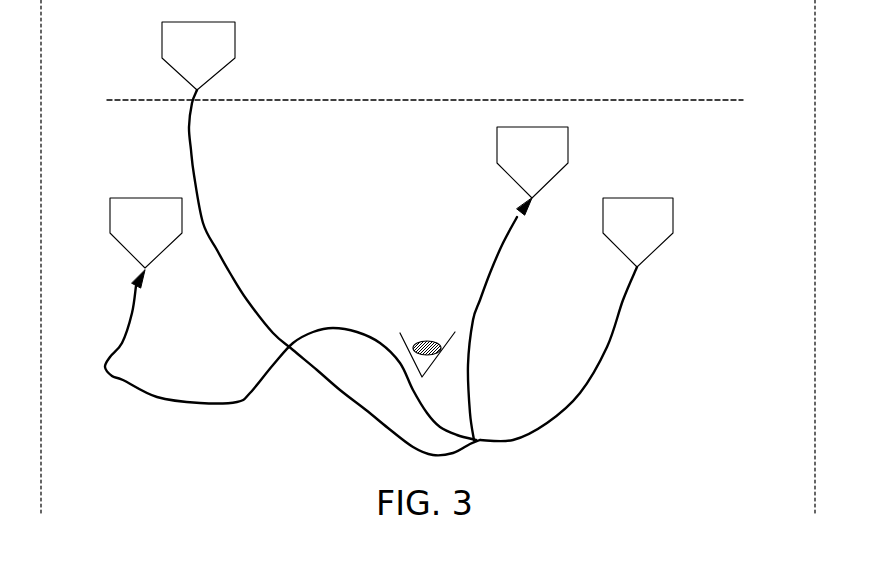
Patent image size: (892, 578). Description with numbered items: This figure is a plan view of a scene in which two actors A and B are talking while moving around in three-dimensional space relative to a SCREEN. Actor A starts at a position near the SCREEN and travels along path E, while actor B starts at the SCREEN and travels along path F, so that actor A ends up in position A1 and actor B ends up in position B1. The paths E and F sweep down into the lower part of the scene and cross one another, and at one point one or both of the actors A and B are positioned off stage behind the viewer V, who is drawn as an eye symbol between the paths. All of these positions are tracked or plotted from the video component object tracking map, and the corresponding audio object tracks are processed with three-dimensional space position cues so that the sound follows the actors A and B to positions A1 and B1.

The actor A is at (655, 232).
The end position of actor A A1 is at (290, 295).
The actor B is at (321, 238).
The end position of actor B B1 is at (564, 171).
The path E is at (558, 354).
The path F is at (488, 328).
The viewer V is at (424, 343).
The screen SCREEN is at (425, 85).